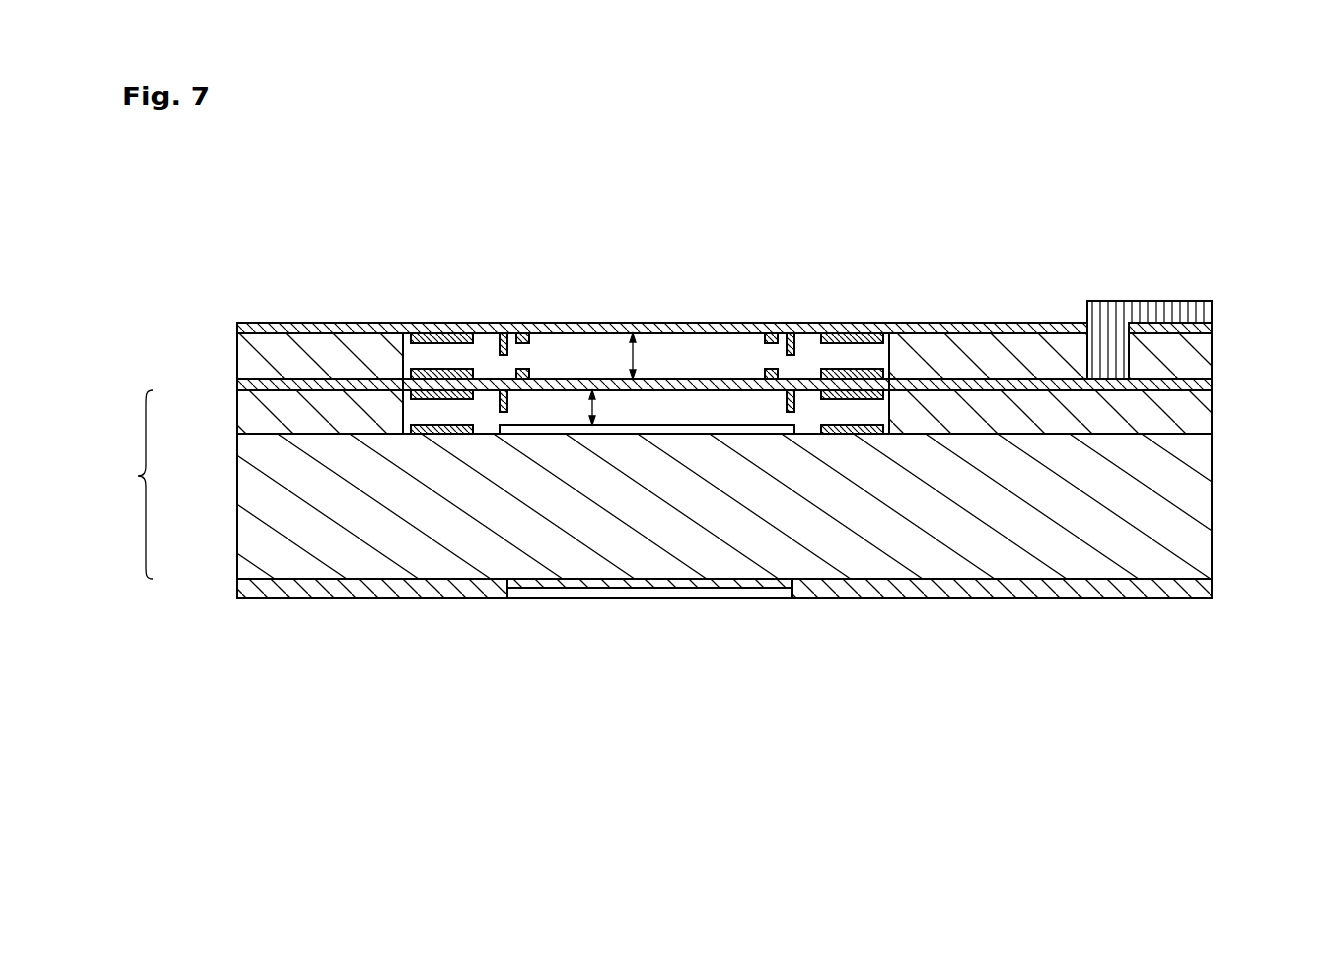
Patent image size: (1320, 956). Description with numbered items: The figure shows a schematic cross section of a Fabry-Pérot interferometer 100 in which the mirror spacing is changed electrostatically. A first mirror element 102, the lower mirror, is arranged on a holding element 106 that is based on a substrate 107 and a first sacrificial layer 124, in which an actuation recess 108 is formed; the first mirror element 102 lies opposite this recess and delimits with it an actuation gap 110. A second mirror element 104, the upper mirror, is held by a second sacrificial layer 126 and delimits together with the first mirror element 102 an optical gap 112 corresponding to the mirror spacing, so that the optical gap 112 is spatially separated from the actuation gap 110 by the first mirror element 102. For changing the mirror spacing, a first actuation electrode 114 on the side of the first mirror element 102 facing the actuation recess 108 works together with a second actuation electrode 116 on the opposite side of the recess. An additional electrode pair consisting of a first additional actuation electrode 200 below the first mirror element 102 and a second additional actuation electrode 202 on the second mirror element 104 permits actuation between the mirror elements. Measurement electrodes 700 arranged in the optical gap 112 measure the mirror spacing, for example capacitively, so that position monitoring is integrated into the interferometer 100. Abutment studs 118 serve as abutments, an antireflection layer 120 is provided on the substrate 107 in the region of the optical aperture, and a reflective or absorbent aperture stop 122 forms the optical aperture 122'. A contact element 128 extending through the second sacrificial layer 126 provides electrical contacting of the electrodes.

The interferometer 100 is at (244, 264).
The first mirror element 102 is at (1205, 385).
The second mirror element 104 is at (258, 331).
The holding element 106 is at (128, 484).
The substrate 107 is at (248, 530).
The actuation recess 108 is at (873, 408).
The actuation gap 110 is at (594, 392).
The optical gap 112 is at (633, 333).
The first actuation electrode 114 is at (462, 396).
The second actuation electrode 116 is at (430, 432).
The abutment studs 118 is at (503, 392).
The antireflection layer 120 is at (713, 434).
The aperture stop 122 is at (724, 625).
The optical aperture 122' is at (649, 625).
The first sacrificial layer 124 is at (258, 405).
The second sacrificial layer 126 is at (258, 357).
The contact element 128 is at (1155, 301).
The first additional actuation electrode 200 is at (433, 370).
The second additional actuation electrode 202 is at (420, 333).
The measurement electrodes 700 is at (530, 374).